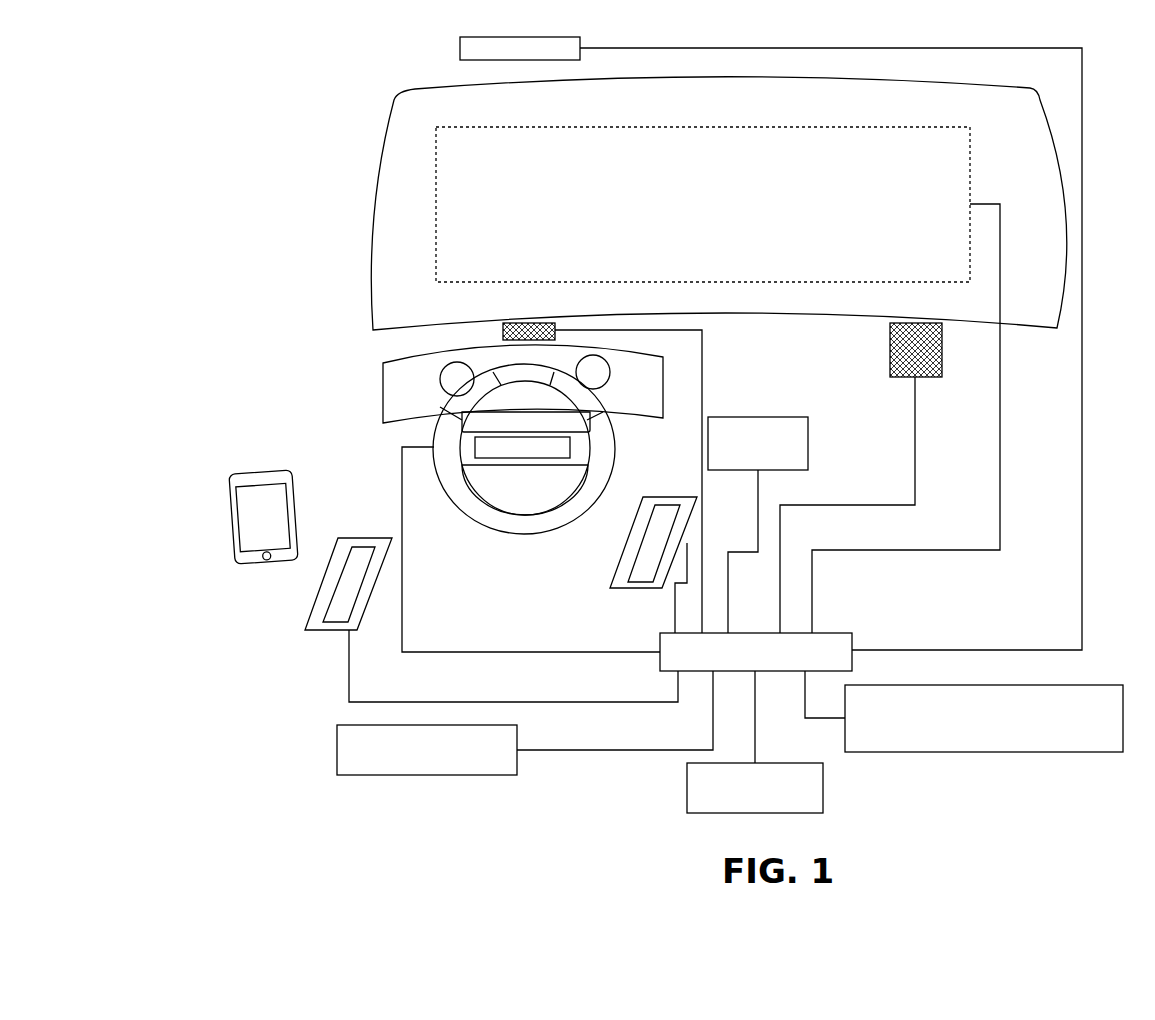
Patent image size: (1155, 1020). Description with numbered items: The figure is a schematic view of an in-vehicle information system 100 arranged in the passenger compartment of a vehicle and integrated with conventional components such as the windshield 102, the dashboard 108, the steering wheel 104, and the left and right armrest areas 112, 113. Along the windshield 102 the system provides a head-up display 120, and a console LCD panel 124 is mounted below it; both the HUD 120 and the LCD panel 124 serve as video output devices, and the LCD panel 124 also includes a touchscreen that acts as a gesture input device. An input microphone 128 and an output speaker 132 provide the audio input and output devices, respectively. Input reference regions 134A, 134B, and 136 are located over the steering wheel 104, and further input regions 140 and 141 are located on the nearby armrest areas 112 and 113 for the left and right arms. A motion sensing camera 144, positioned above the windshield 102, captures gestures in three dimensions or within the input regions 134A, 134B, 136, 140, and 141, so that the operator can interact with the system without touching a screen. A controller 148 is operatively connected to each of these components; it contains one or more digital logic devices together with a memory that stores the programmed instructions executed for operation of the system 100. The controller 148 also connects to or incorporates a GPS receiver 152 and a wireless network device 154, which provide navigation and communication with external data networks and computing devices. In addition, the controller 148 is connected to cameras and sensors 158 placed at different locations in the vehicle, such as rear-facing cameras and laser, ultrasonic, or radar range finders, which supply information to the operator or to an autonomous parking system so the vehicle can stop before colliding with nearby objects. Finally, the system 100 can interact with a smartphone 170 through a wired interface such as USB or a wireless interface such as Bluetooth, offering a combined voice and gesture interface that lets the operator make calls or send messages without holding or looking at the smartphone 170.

The in-vehicle information system 100 is at (276, 167).
The windshield 102 is at (380, 173).
The steering wheel 104 is at (542, 532).
The dashboard 108 is at (382, 408).
The armrest area 112 is at (367, 605).
The armrest area 113 is at (618, 558).
The head-up display (HUD) 120 is at (745, 127).
The console LCD panel 124 is at (788, 417).
The input microphone 128 is at (503, 327).
The output speaker 132 is at (922, 380).
The input reference region 134A is at (447, 402).
The input reference region 134B is at (607, 402).
The input reference region 136 is at (472, 447).
The input region 140 is at (357, 593).
The input region 141 is at (672, 507).
The motion sensing camera 144 is at (528, 37).
The controller 148 is at (830, 632).
The global positioning system (GPS) receiver 152 is at (687, 795).
The wireless network device 154 is at (907, 753).
The cameras and sensors 158 is at (425, 777).
The smartphone 170 is at (232, 522).